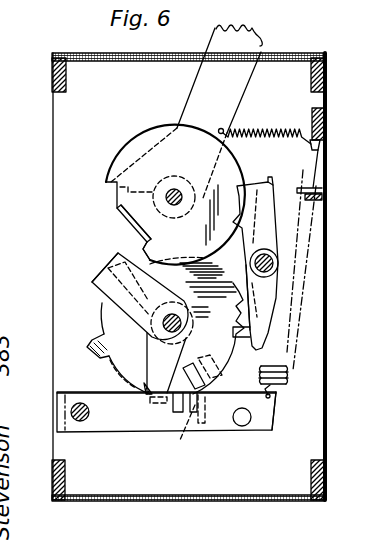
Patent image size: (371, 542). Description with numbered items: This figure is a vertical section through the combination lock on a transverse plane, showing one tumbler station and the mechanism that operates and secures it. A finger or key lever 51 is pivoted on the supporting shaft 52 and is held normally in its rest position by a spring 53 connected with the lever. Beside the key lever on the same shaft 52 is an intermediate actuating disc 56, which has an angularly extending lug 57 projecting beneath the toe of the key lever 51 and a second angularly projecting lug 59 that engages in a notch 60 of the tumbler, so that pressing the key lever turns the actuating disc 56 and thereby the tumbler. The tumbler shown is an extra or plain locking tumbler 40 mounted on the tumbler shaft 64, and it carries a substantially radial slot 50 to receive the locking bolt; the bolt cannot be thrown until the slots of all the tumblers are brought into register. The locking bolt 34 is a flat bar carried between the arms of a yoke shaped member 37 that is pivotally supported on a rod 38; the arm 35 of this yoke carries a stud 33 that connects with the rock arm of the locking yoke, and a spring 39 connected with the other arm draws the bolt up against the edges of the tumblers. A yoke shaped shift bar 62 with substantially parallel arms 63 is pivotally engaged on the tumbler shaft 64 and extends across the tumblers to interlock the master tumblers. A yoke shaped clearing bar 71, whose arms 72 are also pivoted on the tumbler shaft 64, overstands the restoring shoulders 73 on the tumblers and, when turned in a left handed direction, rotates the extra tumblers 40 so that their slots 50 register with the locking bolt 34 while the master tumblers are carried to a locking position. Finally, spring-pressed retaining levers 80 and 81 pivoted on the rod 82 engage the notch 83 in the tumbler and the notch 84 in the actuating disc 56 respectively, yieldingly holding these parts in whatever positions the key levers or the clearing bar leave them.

The key lever 51 is at (262, 41).
The spring 53 is at (250, 133).
The actuator disc 56 is at (133, 151).
The supporting shaft 52 is at (177, 188).
The lug 57 is at (119, 196).
The lug 59 is at (140, 234).
The notch 60 is at (137, 247).
The clearing bar 71 is at (112, 259).
The arm 72 is at (142, 298).
The restoring shoulder 73 is at (97, 337).
The extra tumbler 40 is at (172, 338).
The arm 63 is at (166, 363).
The tumbler shaft 64 is at (181, 329).
The radial slot 50 is at (220, 384).
The shift bar 62 is at (158, 392).
The locking bolt 34 is at (180, 440).
The stud 33 is at (241, 423).
The arm 35 is at (265, 426).
The yoke shaped member 37 is at (65, 410).
The rod 38 is at (82, 422).
The spring 39 is at (287, 377).
The notch 84 is at (245, 187).
The retaining lever 81 is at (272, 233).
The rod 82 is at (278, 265).
The retaining lever 80 is at (273, 303).
The notch 83 is at (246, 328).